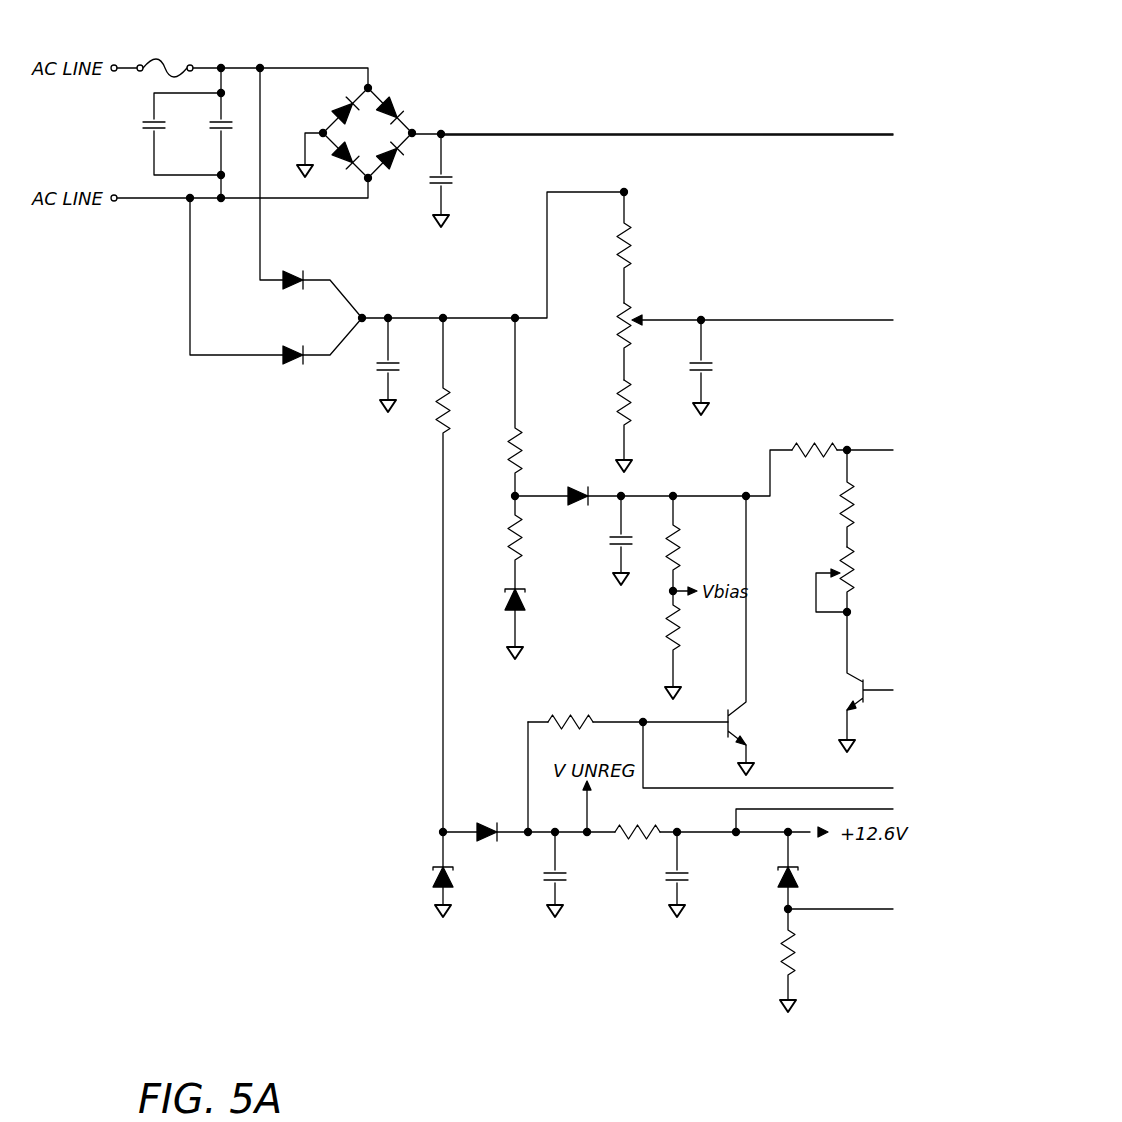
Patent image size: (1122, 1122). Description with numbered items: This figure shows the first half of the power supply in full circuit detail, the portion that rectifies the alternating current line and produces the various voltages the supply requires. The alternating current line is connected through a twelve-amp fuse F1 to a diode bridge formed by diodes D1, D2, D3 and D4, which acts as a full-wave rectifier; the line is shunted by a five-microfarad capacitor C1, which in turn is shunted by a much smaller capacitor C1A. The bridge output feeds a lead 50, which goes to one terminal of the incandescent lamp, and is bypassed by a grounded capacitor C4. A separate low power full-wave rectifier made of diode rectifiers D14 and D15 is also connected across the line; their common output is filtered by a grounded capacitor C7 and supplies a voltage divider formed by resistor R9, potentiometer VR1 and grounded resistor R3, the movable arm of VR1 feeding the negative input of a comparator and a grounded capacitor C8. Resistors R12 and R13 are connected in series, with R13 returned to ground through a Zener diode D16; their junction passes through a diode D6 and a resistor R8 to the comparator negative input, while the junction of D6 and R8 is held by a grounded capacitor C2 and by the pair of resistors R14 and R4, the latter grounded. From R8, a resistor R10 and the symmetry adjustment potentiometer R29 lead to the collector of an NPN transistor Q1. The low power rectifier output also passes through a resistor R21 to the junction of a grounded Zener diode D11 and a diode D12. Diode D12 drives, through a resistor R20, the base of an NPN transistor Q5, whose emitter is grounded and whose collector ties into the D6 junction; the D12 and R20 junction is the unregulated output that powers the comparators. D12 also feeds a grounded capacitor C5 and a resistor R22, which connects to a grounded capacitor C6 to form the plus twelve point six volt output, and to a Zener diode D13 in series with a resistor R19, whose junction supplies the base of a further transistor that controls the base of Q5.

The lead 50 is at (760, 134).
The fuse F1 is at (183, 62).
The capacitor C1A is at (168, 125).
The capacitor C1 is at (235, 125).
The diode D1 is at (337, 105).
The diode D2 is at (342, 158).
The diode D3 is at (398, 104).
The diode D4 is at (392, 166).
The grounded capacitor C4 is at (456, 181).
The diode rectifier D14 is at (292, 262).
The diode rectifier D15 is at (293, 338).
The grounded capacitor C7 is at (400, 369).
The resistor R21 is at (452, 410).
The resistor R9 is at (632, 244).
The potentiometer VR1 is at (612, 324).
The grounded resistor R3 is at (630, 420).
The grounded capacitor C8 is at (714, 367).
The resistor R12 is at (525, 438).
The resistor R13 is at (525, 535).
The Zener diode D16 is at (528, 600).
The diode D6 is at (574, 480).
The grounded capacitor C2 is at (634, 540).
The resistor R14 is at (690, 545).
The resistor R4 is at (682, 630).
The NPN transistor Q5 is at (748, 718).
The resistor R8 is at (803, 442).
The resistor R10 is at (838, 505).
The symmetry adjustment potentiometer R29 is at (838, 565).
The NPN transistor Q1 is at (850, 690).
The resistor R20 is at (560, 712).
The diode D12 is at (489, 820).
The Zener diode D11 is at (453, 880).
The grounded capacitor C5 is at (572, 876).
The grounded capacitor C6 is at (690, 876).
The resistor R22 is at (636, 820).
The Zener diode D13 is at (772, 880).
The resistor R19 is at (802, 952).